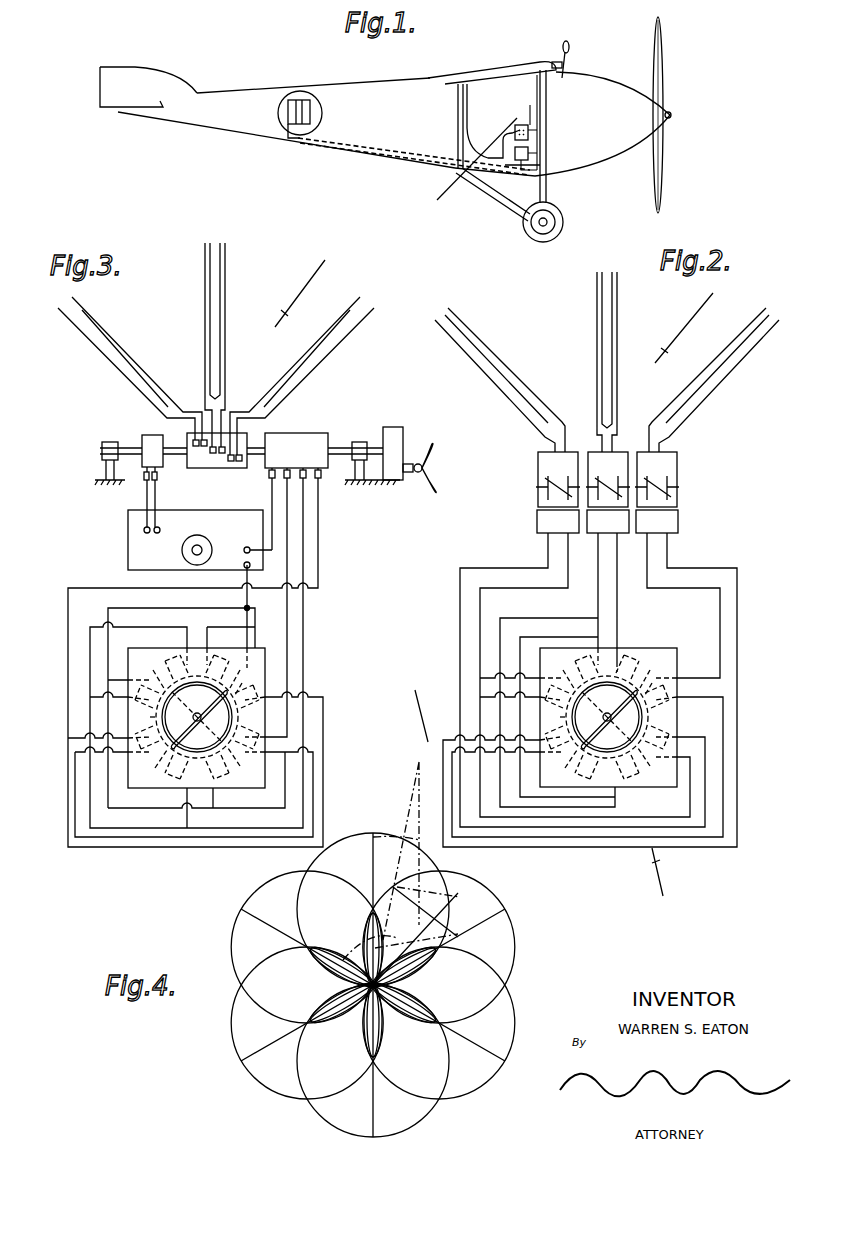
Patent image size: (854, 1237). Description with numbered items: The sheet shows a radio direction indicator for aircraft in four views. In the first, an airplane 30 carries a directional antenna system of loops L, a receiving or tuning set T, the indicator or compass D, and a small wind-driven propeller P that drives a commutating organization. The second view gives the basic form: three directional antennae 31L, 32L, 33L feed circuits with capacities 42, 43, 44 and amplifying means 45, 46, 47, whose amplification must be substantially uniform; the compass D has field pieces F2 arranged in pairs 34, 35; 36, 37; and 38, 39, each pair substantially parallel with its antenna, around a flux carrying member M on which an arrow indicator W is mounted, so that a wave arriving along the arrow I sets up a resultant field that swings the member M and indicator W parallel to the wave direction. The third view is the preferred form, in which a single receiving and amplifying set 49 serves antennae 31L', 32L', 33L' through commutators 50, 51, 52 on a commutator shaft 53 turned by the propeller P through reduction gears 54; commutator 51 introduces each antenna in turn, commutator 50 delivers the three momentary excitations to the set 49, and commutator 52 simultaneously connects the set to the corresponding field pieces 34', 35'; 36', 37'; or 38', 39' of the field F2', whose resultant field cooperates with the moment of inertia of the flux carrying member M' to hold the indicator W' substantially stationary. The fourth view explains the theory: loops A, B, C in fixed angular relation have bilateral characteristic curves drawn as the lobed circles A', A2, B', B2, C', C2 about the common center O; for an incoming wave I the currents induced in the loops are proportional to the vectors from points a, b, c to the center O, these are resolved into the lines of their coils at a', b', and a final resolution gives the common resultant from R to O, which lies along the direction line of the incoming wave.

In FIG. 1, the directional antenna system L is at (300, 100).
In FIG. 1, the receiving or tuning set T is at (530, 113).
In FIG. 1, the wind-driven propeller P is at (565, 44).
In FIG. 3, the wind-driven propeller P is at (430, 446).
In FIG. 1, the airplane 30 is at (372, 162).
In FIG. 1, the direction indicator D is at (467, 166).
In FIG. 2, the direction indicator D is at (666, 872).
In FIG. 2, the directional antenna 31L is at (500, 380).
In FIG. 2, the directional antenna 32L is at (626, 362).
In FIG. 2, the directional antenna 33L is at (714, 380).
In FIG. 2, the incoming wave I is at (686, 328).
In FIG. 3, the incoming wave I is at (303, 293).
In FIG. 4, the incoming wave I is at (415, 716).
In FIG. 2, the capacity 42 is at (538, 489).
In FIG. 2, the capacity 43 is at (590, 455).
In FIG. 2, the capacity 44 is at (677, 486).
In FIG. 2, the amplifying means 45 is at (537, 522).
In FIG. 2, the amplifying means 46 is at (592, 537).
In FIG. 2, the amplifying means 47 is at (678, 522).
In FIG. 2, the field pole piece 34 is at (560, 670).
In FIG. 2, the field pole piece 35 is at (652, 764).
In FIG. 2, the field pole piece 36 is at (654, 668).
In FIG. 2, the field pole piece 37 is at (561, 765).
In FIG. 2, the field pole piece 38 is at (658, 680).
In FIG. 2, the field pole piece 39 is at (555, 718).
In FIG. 2, the indicator arrow W is at (634, 717).
In FIG. 2, the field F2 is at (639, 644).
In FIG. 2, the flux carrying member M is at (634, 793).
In FIG. 3, the directional antenna 31L' is at (130, 365).
In FIG. 3, the directional antenna 32L' is at (195, 338).
In FIG. 3, the directional antenna 33L' is at (302, 365).
In FIG. 3, the commutator 50 is at (148, 435).
In FIG. 3, the commutator 51 is at (250, 440).
In FIG. 3, the commutator 52 is at (320, 433).
In FIG. 3, the commutator shaft 53 is at (360, 440).
In FIG. 3, the reduction gears 54 is at (398, 431).
In FIG. 3, the receiving and amplifying set 49 is at (128, 549).
In FIG. 3, the field pole piece 34' is at (149, 671).
In FIG. 3, the field pole piece 35' is at (242, 764).
In FIG. 3, the field pole piece 36' is at (233, 668).
In FIG. 3, the field pole piece 37' is at (150, 765).
In FIG. 3, the field pole piece 38' is at (237, 680).
In FIG. 3, the field pole piece 39' is at (143, 718).
In FIG. 3, the indicator W' is at (253, 717).
In FIG. 3, the field F2' is at (303, 645).
In FIG. 3, the flux carrying member M' is at (230, 789).
In FIG. 4, the loop A is at (339, 967).
In FIG. 4, the circle A' is at (307, 944).
In FIG. 4, the bilateral characteristic curve A2 is at (514, 1013).
In FIG. 4, the loop B is at (341, 1008).
In FIG. 4, the circle B' is at (307, 1026).
In FIG. 4, the bilateral characteristic curve B2 is at (474, 882).
In FIG. 4, the loop C is at (383, 1021).
In FIG. 4, the circle C' is at (373, 901).
In FIG. 4, the bilateral characteristic curve C2 is at (425, 1105).
In FIG. 4, the common center O is at (378, 985).
In FIG. 4, the common resultant R is at (408, 851).
In FIG. 4, the vector end point a is at (390, 941).
In FIG. 4, the resolved vector end point a' is at (329, 978).
In FIG. 4, the vector end point b is at (384, 879).
In FIG. 4, the resolved vector end point b' is at (467, 940).
In FIG. 4, the vector end point c is at (427, 837).